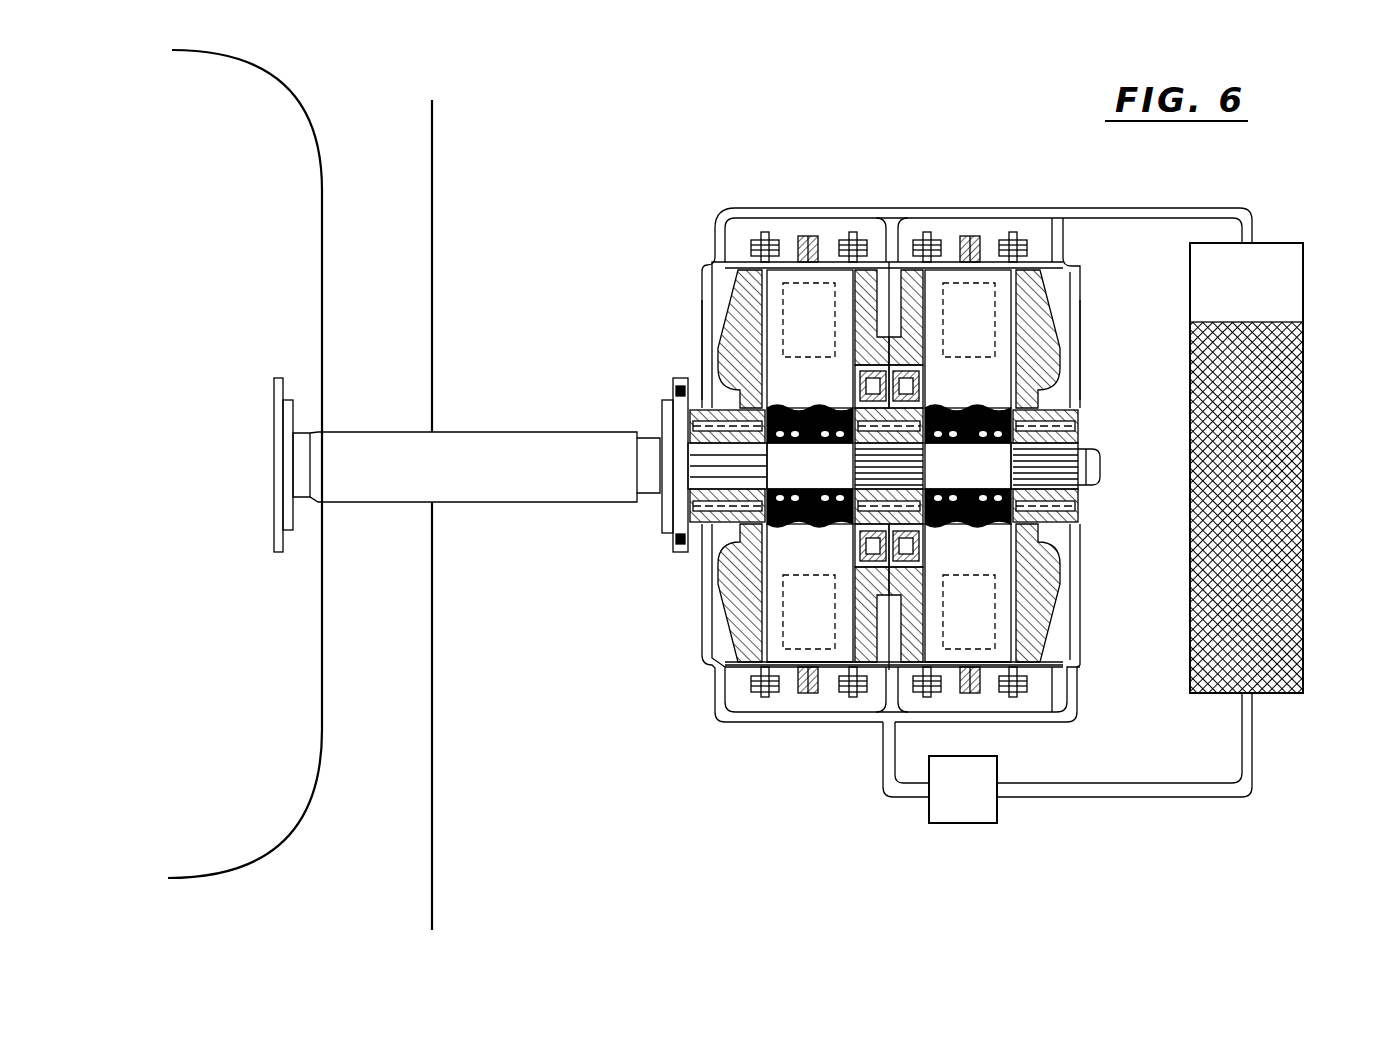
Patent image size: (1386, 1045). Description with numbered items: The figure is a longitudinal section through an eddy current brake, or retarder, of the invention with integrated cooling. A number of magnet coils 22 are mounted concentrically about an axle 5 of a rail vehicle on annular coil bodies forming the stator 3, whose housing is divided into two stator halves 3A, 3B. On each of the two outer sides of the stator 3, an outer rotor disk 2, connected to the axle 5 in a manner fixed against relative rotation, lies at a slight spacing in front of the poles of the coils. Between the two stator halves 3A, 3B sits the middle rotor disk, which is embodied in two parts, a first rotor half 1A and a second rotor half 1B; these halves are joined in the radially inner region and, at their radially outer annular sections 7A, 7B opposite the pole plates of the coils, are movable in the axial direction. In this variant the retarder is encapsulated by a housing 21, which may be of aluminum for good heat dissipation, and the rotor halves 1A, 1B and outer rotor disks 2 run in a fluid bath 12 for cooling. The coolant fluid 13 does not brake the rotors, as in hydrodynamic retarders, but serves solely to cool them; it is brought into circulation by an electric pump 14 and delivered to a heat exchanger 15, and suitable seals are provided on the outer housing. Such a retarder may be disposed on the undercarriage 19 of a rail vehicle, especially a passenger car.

The rotor half 1A is at (860, 357).
The second rotor half 1B is at (922, 357).
The outer rotor disk 2 is at (881, 414).
The stator 3 is at (952, 655).
The stator half 3A is at (795, 650).
The stator half 3B is at (988, 653).
The axle 5 is at (444, 398).
The annular section 7A is at (860, 303).
The annular section 7B is at (927, 303).
The fluid bath 12 is at (901, 338).
The coolant fluid 13 is at (1023, 192).
The electric pump 14 is at (1067, 793).
The heat exchanger 15 is at (1285, 468).
The undercarriage 19 is at (241, 471).
The housing 21 is at (855, 465).
The magnet coil 22 is at (797, 323).